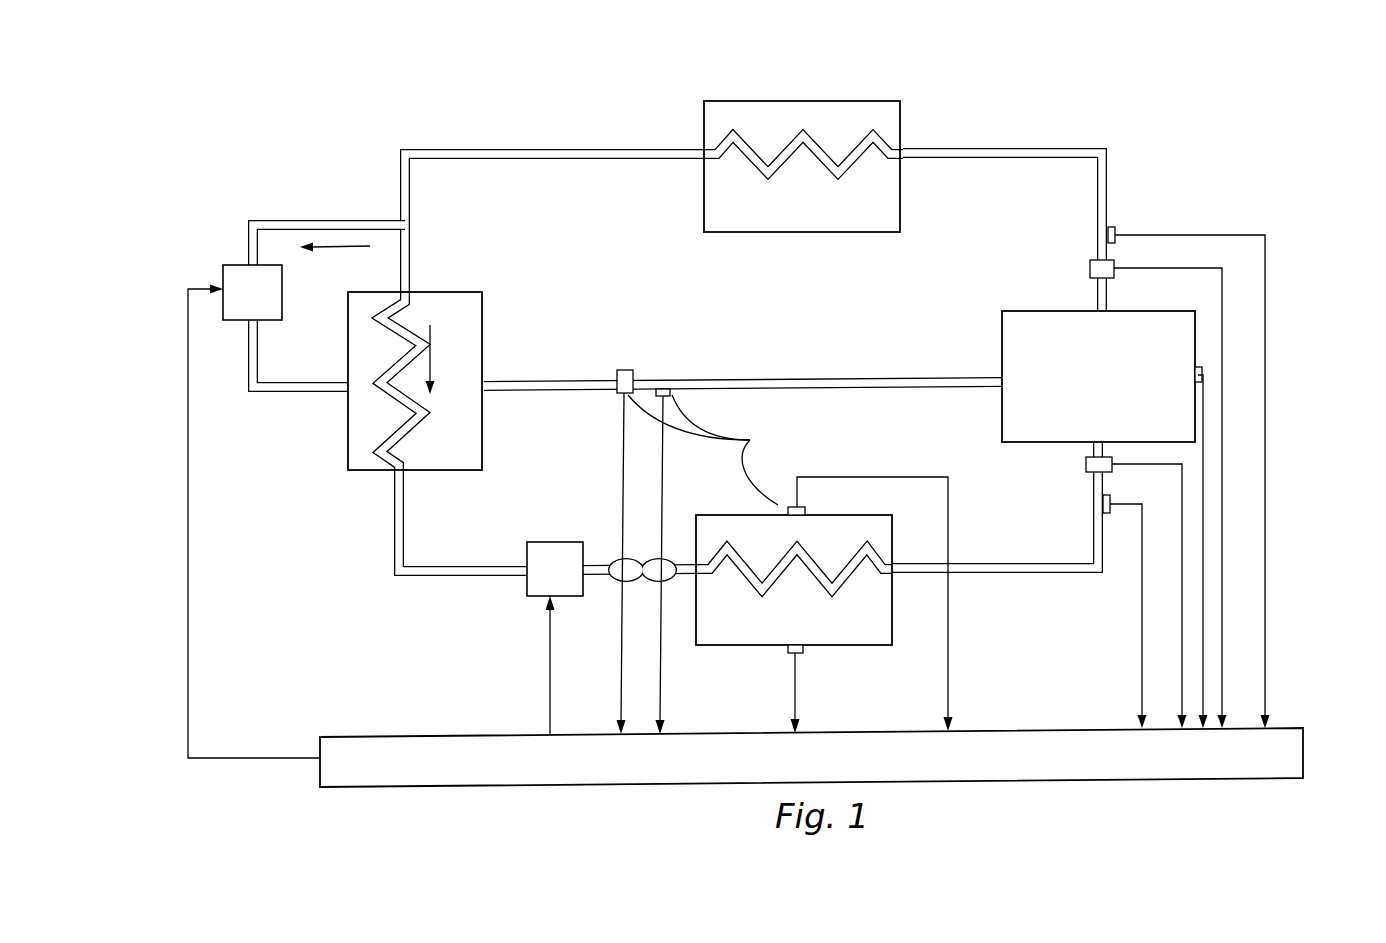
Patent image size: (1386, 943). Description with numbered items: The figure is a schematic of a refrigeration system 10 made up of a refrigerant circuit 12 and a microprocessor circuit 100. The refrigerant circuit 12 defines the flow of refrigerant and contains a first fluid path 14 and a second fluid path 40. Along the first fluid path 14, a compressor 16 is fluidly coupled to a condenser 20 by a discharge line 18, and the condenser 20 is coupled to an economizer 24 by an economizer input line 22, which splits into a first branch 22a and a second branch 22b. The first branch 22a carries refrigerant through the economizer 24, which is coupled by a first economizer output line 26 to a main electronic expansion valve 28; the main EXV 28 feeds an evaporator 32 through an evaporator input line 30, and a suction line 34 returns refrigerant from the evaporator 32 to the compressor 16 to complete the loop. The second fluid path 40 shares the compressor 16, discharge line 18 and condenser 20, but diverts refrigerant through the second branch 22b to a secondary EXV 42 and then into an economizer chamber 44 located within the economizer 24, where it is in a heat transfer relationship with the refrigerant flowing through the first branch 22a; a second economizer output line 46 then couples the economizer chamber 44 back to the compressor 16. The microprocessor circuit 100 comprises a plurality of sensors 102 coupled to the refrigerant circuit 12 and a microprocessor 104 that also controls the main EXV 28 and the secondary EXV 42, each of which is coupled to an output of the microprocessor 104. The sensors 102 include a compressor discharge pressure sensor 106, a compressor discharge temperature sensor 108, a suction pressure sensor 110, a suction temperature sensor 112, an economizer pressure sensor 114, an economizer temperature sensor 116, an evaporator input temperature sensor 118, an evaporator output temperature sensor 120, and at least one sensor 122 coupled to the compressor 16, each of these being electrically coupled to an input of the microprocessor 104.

The refrigeration system 10 is at (1316, 429).
The refrigerant circuit 12 is at (460, 122).
The first fluid path 14 is at (431, 347).
The compressor 16 is at (1012, 352).
The discharge line 18 is at (1108, 180).
The condenser 20 is at (893, 113).
The economizer input line 22 is at (575, 157).
The first branch 22a is at (410, 263).
The second branch 22b is at (285, 227).
The economizer 24 is at (485, 313).
The first economizer output line 26 is at (403, 526).
The main electronic expansion valve 28 is at (525, 593).
The evaporator input line 30 is at (598, 558).
The evaporator 32 is at (873, 640).
The suction line 34 is at (1043, 575).
The second fluid path 40 is at (335, 257).
The secondary EXV 42 is at (232, 270).
The economizer chamber 44 is at (355, 432).
The second economizer output line 46 is at (530, 383).
The microprocessor circuit 100 is at (1104, 815).
The plurality of sensors 102 is at (712, 450).
The microprocessor 104 is at (997, 767).
The compressor discharge pressure sensor 106 is at (1105, 272).
The compressor discharge temperature sensor 108 is at (1118, 229).
The suction pressure sensor 110 is at (1115, 468).
The suction temperature sensor 112 is at (1107, 515).
The economizer pressure sensor 114 is at (635, 372).
The economizer temperature sensor 116 is at (665, 388).
The evaporator input temperature sensor 118 is at (785, 651).
The evaporator output temperature sensor 120 is at (808, 505).
The compressor sensor 122 is at (1205, 365).